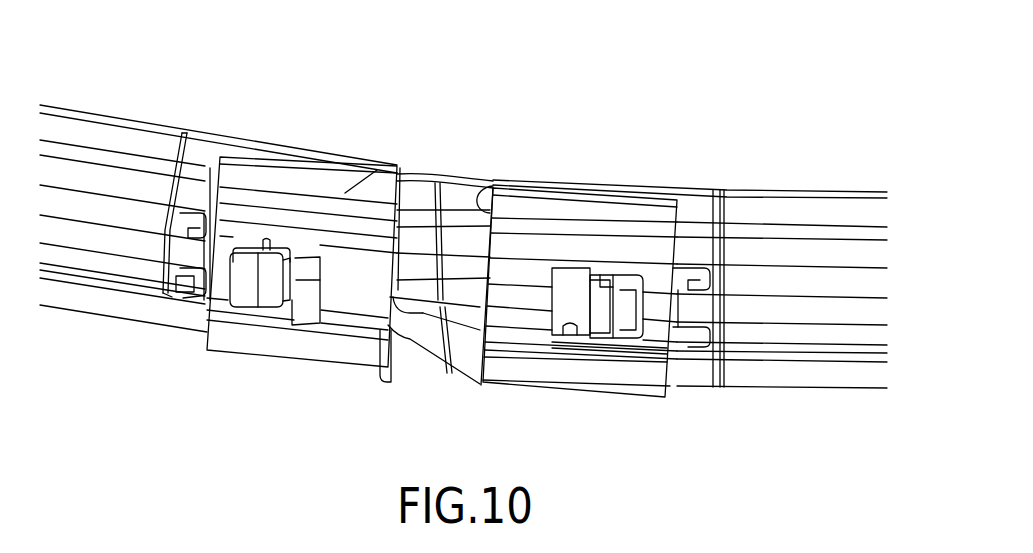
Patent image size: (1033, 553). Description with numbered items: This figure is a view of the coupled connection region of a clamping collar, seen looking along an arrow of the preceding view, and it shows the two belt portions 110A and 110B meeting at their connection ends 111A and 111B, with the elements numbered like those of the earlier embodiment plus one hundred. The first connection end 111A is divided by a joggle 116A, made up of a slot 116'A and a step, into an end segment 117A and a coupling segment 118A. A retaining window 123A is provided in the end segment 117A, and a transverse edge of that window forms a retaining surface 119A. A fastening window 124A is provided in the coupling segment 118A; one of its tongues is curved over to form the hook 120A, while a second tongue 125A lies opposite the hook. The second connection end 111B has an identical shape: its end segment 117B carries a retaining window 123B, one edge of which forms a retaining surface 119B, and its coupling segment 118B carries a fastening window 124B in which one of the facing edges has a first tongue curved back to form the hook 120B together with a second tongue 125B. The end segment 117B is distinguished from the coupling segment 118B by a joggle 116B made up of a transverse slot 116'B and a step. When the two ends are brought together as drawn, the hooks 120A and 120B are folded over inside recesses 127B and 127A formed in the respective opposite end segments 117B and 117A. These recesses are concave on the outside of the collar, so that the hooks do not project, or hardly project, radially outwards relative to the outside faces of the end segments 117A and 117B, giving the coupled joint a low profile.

The belt portion 110A is at (866, 378).
The belt portion 110B is at (97, 135).
The connection end 111A is at (645, 137).
The connection end 111B is at (342, 103).
The joggle 116A is at (417, 377).
The joggle 116B is at (468, 153).
The slot 116'A is at (558, 263).
The transverse slot 116'B is at (396, 357).
The end segment 117A is at (390, 166).
The end segment 117B is at (517, 375).
The coupling segment 118A is at (655, 188).
The coupling segment 118B is at (347, 158).
The retaining surface 119A is at (289, 236).
The retaining surface 119B is at (588, 330).
The hook 120A is at (625, 303).
The hook 120B is at (242, 282).
The retaining window 123A is at (310, 277).
The retaining window 123B is at (553, 327).
The fastening window 124A is at (683, 325).
The fastening window 124B is at (195, 313).
The second tongue 125A is at (680, 310).
The second tongue 125B is at (160, 240).
The recess 127A is at (220, 257).
The recess 127B is at (652, 315).